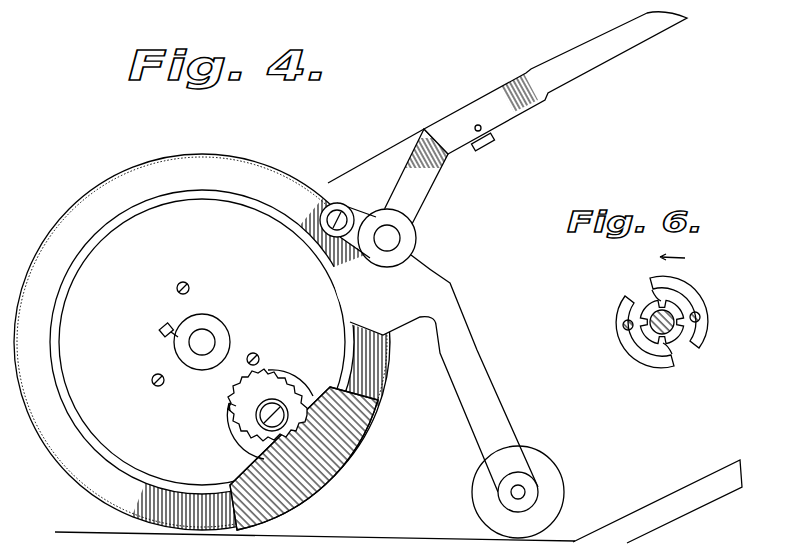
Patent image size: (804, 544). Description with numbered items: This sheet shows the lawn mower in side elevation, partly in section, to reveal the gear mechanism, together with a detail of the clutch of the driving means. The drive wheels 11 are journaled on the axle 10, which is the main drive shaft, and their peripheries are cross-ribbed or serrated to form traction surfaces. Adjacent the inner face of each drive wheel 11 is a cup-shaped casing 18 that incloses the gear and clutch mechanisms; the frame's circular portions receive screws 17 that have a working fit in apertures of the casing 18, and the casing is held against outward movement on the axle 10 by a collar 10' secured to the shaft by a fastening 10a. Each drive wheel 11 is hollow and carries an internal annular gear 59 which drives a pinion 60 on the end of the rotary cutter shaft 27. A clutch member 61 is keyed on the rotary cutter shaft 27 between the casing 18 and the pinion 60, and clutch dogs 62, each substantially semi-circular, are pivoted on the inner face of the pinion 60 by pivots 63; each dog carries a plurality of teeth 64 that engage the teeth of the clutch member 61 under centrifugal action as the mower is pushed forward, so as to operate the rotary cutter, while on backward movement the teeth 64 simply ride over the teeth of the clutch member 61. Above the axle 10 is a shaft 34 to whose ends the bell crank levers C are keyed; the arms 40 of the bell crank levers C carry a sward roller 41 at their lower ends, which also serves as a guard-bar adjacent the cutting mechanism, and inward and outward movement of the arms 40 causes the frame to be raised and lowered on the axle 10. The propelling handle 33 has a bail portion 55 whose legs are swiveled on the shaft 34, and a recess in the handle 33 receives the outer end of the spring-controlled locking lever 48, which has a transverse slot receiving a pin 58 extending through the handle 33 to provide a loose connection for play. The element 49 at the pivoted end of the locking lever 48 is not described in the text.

In FIG. 4, the drive wheels 11 is at (77, 205).
In FIG. 4, the cup-shaped casings 18 is at (89, 286).
In FIG. 4, the screws 17 is at (188, 284).
In FIG. 4, the axle 10 is at (211, 335).
In FIG. 4, the fastenings 10a is at (155, 330).
In FIG. 4, the collars 10' is at (191, 385).
In FIG. 4, the clutch dogs 62 is at (307, 386).
In FIG. 6, the clutch dogs 62 is at (692, 296).
In FIG. 4, the pinions 60 is at (252, 417).
In FIG. 4, the internal annular gear 59 is at (236, 470).
In FIG. 4, the locking lever 48 is at (382, 152).
In FIG. 4, the pivot screw 49 is at (328, 204).
In FIG. 4, the propelling handle 33 is at (569, 61).
In FIG. 4, the pin 58 is at (497, 133).
In FIG. 4, the bail portion 55 is at (413, 188).
In FIG. 4, the shaft 34 is at (400, 237).
In FIG. 4, the bell crank levers C is at (452, 283).
In FIG. 4, the arms 40 is at (480, 400).
In FIG. 4, the sward roller 41 is at (547, 463).
In FIG. 6, the teeth 64 is at (651, 289).
In FIG. 6, the pivots 63 is at (623, 323).
In FIG. 6, the rotary cutter shaft 27 is at (672, 325).
In FIG. 6, the clutch member 61 is at (650, 336).